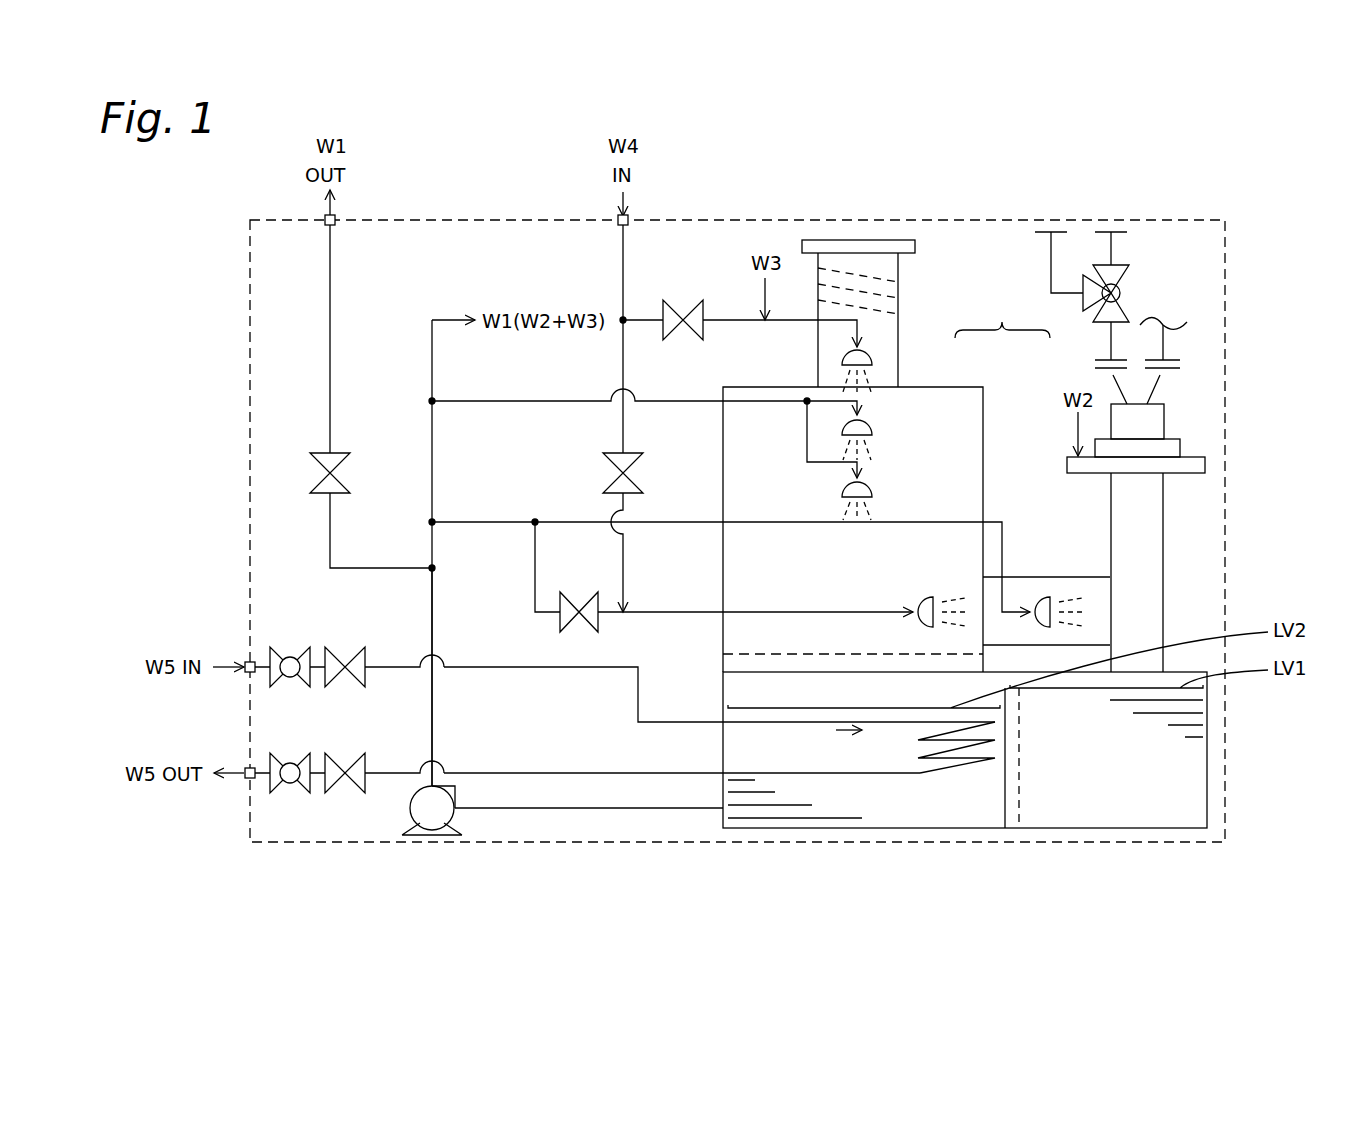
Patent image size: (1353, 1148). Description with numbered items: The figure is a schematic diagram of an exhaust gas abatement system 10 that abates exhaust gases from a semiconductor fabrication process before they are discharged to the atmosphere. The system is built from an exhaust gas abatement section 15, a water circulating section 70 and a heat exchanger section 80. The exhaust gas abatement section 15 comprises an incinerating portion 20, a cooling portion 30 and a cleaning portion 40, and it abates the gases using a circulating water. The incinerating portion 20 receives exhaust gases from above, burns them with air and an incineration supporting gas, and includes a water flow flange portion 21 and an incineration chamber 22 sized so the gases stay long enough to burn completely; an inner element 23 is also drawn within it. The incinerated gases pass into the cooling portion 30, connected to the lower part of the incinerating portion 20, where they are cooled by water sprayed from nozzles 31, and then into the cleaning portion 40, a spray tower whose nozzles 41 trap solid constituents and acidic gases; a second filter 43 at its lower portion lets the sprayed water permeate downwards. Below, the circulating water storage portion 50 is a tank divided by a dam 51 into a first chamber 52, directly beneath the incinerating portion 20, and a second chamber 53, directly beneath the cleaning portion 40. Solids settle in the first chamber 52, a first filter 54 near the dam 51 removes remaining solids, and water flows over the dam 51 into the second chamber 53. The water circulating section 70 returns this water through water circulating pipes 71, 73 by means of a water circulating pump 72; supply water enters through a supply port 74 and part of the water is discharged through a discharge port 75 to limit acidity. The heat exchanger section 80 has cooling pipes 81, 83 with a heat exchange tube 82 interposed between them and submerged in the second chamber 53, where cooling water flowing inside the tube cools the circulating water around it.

The exhaust gas abatement system 10 is at (1182, 220).
The exhaust gas abatement section 15 is at (1002, 319).
The incinerating portion 20 is at (1057, 437).
The water flow flange portion 21 is at (1205, 465).
The incineration chamber 22 is at (1166, 510).
The rotary shaft 23 is at (1160, 565).
The cooling portion 30 is at (1086, 577).
The nozzles 31 is at (922, 597).
The cleaning portion 40 is at (945, 387).
The nozzles 41 is at (872, 428).
The second filter 43 is at (825, 650).
The circulating water storage portion 50 is at (1207, 718).
The dam 51 is at (1005, 792).
The first chamber 52 is at (1134, 800).
The second chamber 53 is at (880, 802).
The first filter 54 is at (1020, 722).
The water circulating section 70 is at (864, 732).
The water circulating pipe 71 is at (518, 810).
The water circulating pump 72 is at (437, 828).
The water circulating pipe 73 is at (432, 705).
The supply port 74 is at (629, 220).
The discharge port 75 is at (336, 220).
The heat exchanger section 80 is at (719, 742).
The cooling pipe 81 is at (618, 667).
The heat exchange tube 82 is at (957, 765).
The cooling pipe 83 is at (624, 775).